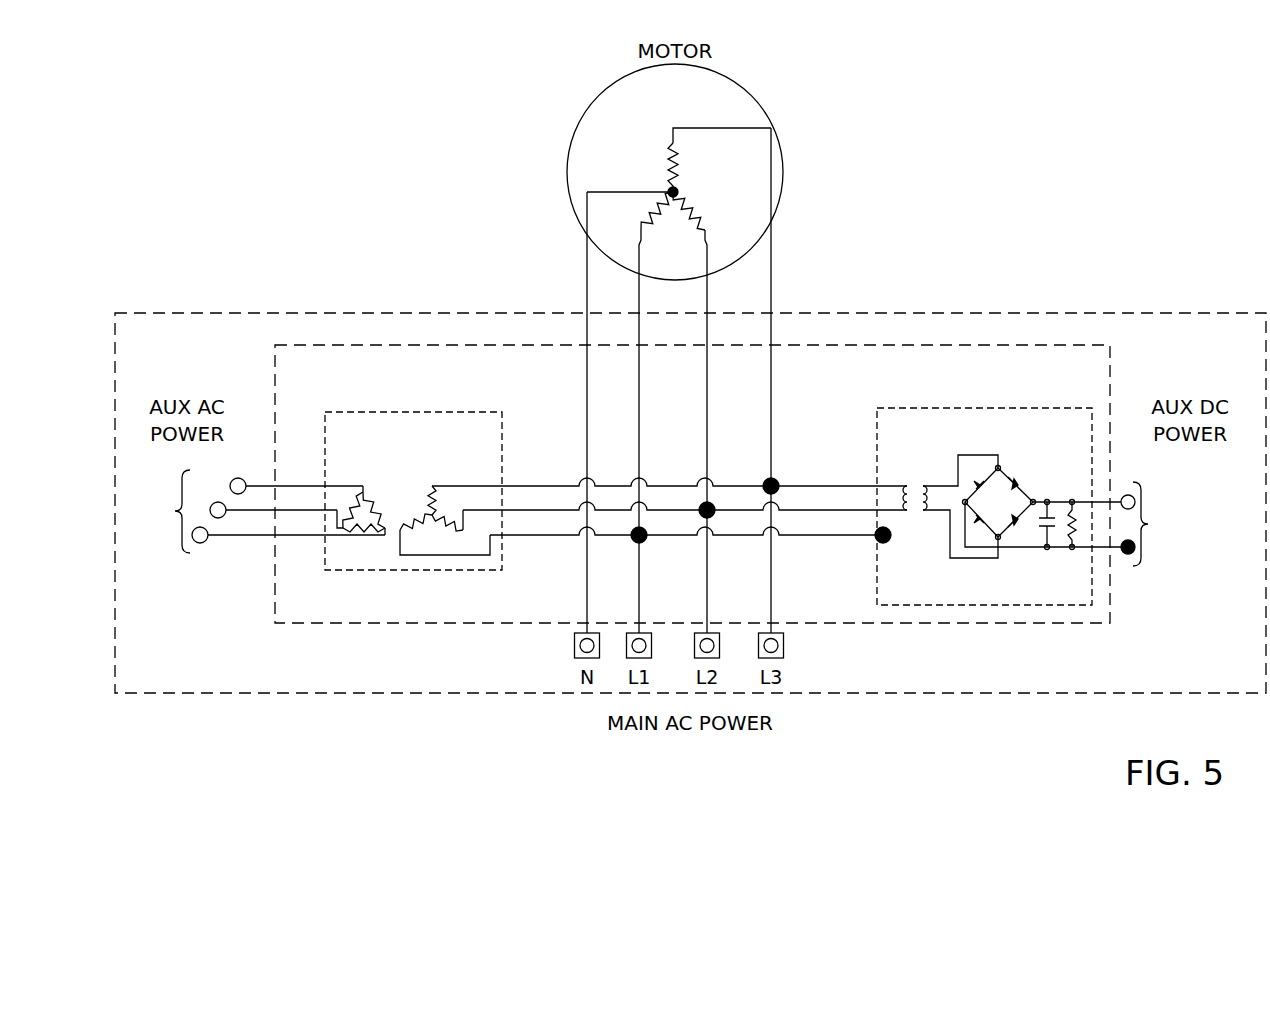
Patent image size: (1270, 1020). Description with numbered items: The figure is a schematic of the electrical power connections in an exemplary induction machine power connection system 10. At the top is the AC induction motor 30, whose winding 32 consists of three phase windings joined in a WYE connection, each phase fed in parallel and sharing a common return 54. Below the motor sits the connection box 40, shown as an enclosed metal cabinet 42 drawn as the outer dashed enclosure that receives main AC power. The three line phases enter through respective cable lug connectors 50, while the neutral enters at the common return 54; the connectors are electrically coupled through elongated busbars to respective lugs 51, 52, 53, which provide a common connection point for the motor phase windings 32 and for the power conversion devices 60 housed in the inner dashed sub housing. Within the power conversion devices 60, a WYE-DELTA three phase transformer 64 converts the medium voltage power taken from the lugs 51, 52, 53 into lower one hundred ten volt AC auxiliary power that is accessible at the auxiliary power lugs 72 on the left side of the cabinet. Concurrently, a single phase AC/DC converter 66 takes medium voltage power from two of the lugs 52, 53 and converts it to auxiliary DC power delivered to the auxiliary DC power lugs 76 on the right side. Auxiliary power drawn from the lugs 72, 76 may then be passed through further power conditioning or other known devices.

The induction machine power connection system 10 is at (378, 98).
The AC induction motor 30 is at (590, 154).
The winding 32 is at (704, 176).
The connection box 40 is at (372, 730).
The enclosed metal cabinet 42 is at (150, 694).
The cable lug connectors 50 is at (642, 633).
The lug 51 is at (636, 538).
The lug 52 is at (704, 507).
The lug 53 is at (774, 483).
The common return 54 is at (574, 646).
The power conversion devices 60 is at (452, 627).
The WYE-DELTA three phase transformer 64 is at (506, 425).
The single phase AC/DC converter 66 is at (874, 432).
The auxiliary power lugs 72 is at (262, 511).
The auxiliary DC power lugs 76 is at (1155, 524).